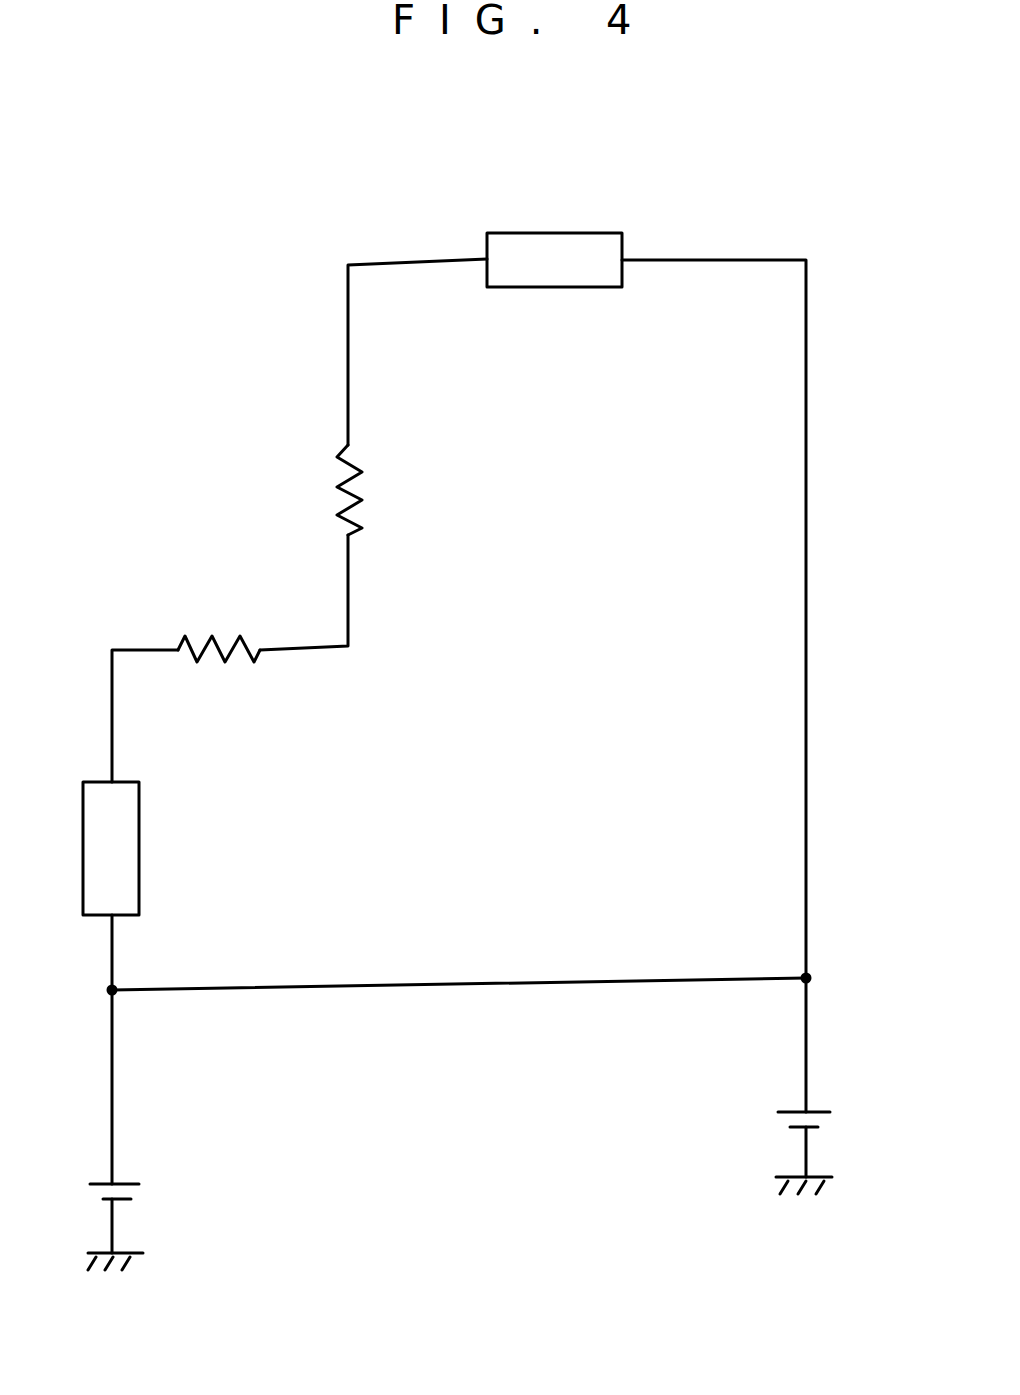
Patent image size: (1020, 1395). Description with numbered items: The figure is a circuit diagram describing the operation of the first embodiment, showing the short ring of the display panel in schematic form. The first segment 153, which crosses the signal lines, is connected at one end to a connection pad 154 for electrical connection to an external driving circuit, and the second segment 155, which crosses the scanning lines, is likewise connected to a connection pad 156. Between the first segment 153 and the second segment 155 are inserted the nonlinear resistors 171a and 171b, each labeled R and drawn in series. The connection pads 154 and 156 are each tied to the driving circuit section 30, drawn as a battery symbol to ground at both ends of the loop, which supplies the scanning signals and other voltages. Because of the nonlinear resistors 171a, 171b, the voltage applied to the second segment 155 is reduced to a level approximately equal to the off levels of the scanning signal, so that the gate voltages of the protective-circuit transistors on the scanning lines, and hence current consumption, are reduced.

The connection pad 156 is at (583, 233).
The nonlinear resistor 171b is at (340, 473).
The nonlinear resistor 171a is at (216, 632).
The second segment 155 is at (348, 603).
The first segment 153 is at (112, 742).
The connection pad 154 is at (129, 848).
The driving circuit section 30 is at (125, 1185).